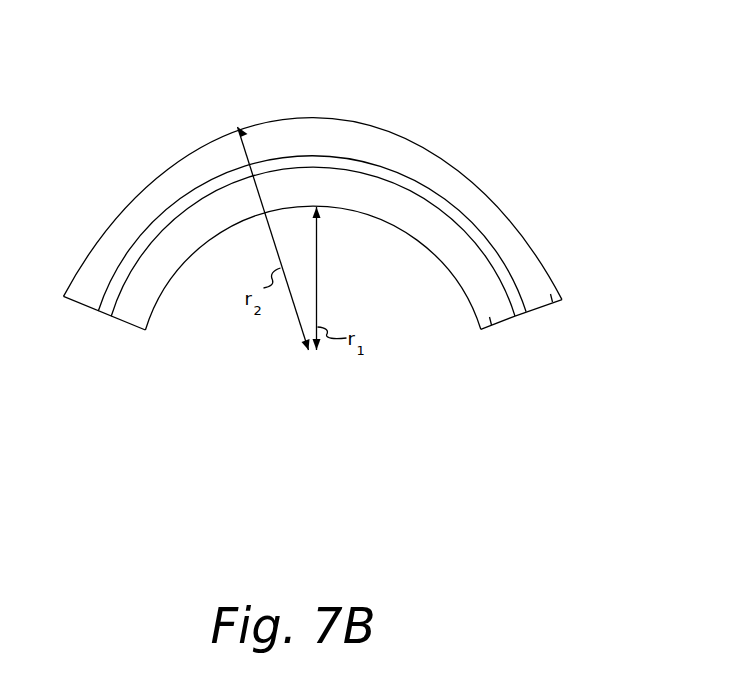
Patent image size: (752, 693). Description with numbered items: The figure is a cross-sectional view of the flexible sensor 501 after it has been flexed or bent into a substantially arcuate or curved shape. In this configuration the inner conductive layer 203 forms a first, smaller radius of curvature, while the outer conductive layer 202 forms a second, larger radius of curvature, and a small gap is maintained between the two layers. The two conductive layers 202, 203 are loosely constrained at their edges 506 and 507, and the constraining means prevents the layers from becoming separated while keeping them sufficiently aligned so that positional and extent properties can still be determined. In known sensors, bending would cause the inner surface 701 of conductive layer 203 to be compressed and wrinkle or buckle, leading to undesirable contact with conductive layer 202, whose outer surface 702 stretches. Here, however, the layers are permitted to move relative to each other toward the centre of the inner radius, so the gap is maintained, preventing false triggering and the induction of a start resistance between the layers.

The flexible sensor 501 is at (339, 212).
The outer surface 702 is at (316, 113).
The inner surface 701 is at (420, 247).
The edge 506 is at (102, 312).
The conductive layer 203 is at (492, 322).
The edge 507 is at (519, 318).
The conductive layer 202 is at (551, 300).